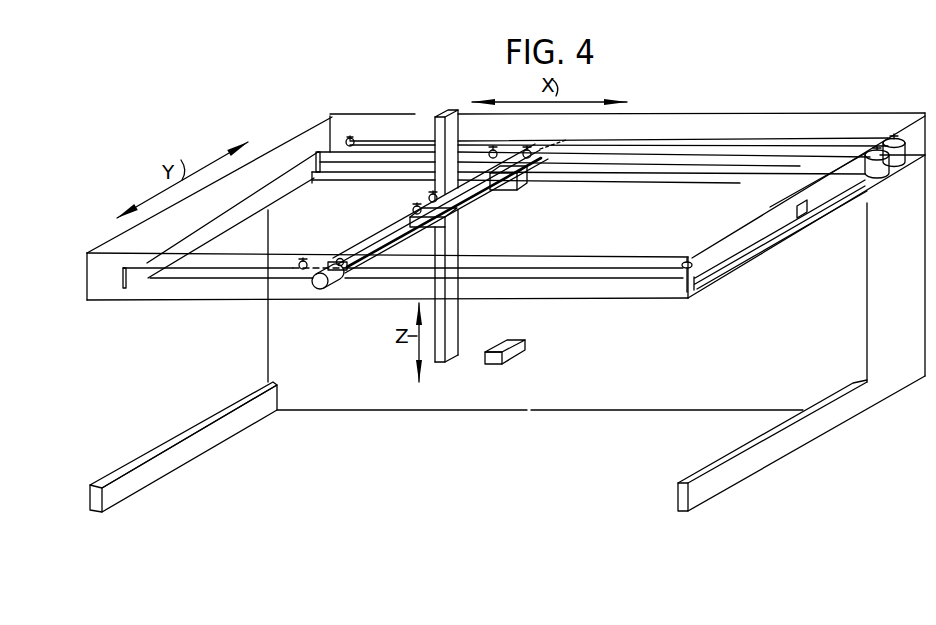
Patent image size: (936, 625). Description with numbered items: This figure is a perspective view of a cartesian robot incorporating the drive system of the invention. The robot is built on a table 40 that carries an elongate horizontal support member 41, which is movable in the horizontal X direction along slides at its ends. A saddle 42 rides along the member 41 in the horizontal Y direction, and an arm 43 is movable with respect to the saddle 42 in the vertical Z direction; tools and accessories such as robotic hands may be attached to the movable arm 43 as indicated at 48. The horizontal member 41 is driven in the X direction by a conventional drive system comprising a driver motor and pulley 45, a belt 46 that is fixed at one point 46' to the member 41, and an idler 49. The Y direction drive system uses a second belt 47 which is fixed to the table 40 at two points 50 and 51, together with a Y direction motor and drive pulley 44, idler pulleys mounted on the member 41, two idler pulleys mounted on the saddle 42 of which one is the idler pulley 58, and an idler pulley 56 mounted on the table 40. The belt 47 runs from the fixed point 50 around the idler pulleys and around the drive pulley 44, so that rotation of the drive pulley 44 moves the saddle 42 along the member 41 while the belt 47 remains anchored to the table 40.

The table 40 is at (687, 122).
The elongate horizontal support member 41 is at (398, 229).
The saddle 42 is at (445, 213).
The arm 43 is at (466, 252).
The Y direction motor and drive pulley 44 is at (881, 176).
The driver motor and pulley 45 is at (894, 135).
The belt 46 is at (591, 127).
The fixed point 46' is at (619, 110).
The belt 47 is at (608, 244).
The tool attachment 48 is at (524, 358).
The idler 49 is at (352, 140).
The fixed point 50 is at (318, 150).
The fixed point 51 is at (125, 289).
The idler pulley 56 is at (687, 260).
The idler pulley 58 is at (413, 209).